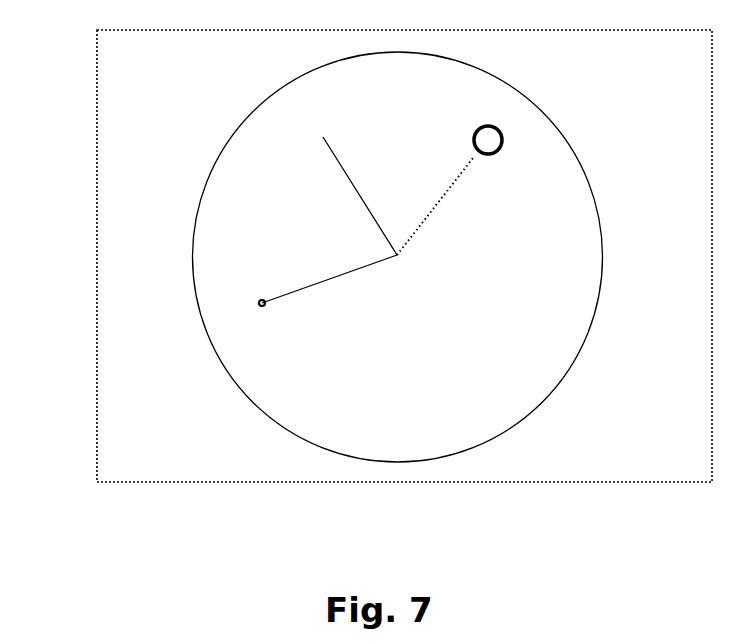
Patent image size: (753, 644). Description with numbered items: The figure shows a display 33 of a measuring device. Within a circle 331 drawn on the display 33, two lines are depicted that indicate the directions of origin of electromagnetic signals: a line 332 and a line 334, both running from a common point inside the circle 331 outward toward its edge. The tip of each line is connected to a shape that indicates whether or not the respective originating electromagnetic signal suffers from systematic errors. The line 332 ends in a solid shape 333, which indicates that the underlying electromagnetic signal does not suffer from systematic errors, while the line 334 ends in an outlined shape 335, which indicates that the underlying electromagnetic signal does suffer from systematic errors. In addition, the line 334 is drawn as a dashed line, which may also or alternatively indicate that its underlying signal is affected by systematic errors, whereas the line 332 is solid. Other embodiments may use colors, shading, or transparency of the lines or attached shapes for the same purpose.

The display 33 is at (97, 462).
The circle 331 is at (578, 352).
The line 332 is at (280, 295).
The solid shape 333 is at (262, 303).
The dashed line 334 is at (450, 188).
The outlined shape 335 is at (503, 134).